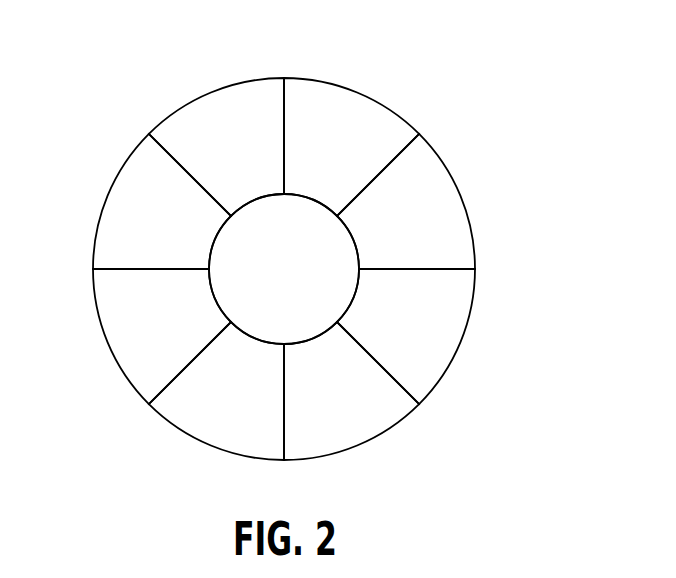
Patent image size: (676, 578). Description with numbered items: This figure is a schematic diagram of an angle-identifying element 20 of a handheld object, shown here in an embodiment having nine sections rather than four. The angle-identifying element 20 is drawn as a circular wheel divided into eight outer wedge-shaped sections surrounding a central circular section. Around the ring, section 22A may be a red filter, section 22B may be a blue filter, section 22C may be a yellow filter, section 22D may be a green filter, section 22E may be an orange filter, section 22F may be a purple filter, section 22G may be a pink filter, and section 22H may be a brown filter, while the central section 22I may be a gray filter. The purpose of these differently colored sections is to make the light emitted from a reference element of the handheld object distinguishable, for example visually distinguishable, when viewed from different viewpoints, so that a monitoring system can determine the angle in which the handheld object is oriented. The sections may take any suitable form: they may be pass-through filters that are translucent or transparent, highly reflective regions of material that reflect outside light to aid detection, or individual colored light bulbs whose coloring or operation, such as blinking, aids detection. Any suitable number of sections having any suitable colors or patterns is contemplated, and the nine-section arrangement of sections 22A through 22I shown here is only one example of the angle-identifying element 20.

The angle-identifying element 20 is at (305, 242).
The section 22A is at (217, 107).
The section 22B is at (353, 107).
The section 22C is at (432, 175).
The section 22D is at (457, 293).
The section 22E is at (367, 428).
The section 22F is at (202, 427).
The section 22G is at (113, 293).
The section 22H is at (135, 173).
The section 22I is at (253, 220).